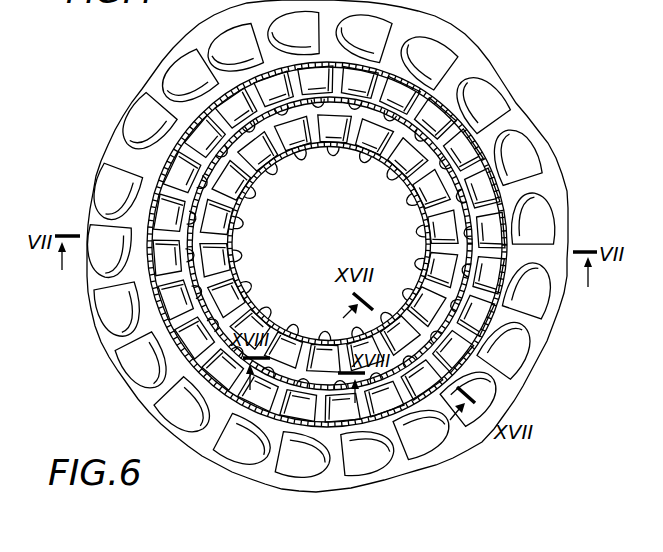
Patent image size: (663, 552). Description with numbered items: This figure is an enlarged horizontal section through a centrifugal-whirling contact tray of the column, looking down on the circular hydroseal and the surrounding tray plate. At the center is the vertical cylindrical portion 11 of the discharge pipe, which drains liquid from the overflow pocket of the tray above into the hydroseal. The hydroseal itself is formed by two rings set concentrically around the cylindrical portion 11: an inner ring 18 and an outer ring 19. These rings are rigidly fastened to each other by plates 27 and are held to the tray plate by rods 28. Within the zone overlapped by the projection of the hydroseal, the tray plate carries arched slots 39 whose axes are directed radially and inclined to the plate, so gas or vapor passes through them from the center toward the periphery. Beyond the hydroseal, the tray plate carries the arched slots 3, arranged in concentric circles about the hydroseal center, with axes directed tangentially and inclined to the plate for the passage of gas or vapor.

The arched slots 3 is at (533, 205).
The cylindrical portion 11 is at (315, 158).
The inner ring 18 is at (470, 77).
The outer ring 19 is at (437, 97).
The plates 27 is at (440, 235).
The rods 28 is at (184, 108).
The arched slots 39 is at (457, 144).